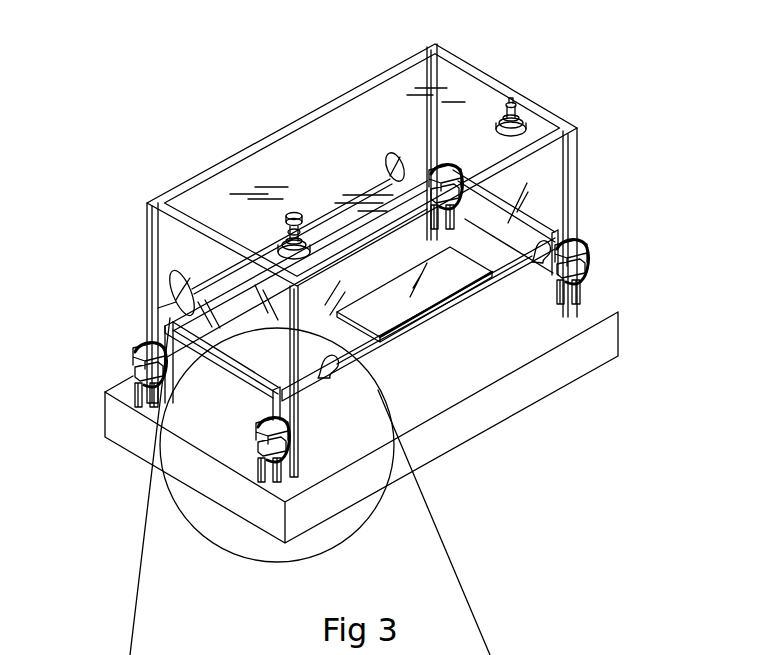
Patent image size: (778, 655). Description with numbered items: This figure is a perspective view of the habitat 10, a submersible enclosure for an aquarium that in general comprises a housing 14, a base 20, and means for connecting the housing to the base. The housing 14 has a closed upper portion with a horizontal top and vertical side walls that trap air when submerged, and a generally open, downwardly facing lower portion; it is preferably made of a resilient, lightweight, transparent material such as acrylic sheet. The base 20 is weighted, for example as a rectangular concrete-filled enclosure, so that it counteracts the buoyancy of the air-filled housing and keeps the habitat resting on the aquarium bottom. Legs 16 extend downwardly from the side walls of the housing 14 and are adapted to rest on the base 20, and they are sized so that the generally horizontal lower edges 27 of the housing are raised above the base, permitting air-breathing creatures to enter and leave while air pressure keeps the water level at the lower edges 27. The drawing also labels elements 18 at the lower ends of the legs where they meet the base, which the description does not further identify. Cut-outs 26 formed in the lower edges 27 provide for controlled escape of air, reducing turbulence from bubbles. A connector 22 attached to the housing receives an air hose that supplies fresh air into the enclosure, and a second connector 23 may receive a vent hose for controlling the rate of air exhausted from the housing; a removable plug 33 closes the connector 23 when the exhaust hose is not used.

The habitat 10 is at (163, 170).
The housing 14 is at (580, 150).
The legs 16 is at (427, 187).
The clips 18 is at (473, 203).
The base 20 is at (437, 458).
The connector 22 is at (527, 112).
The second connector 23 is at (245, 213).
The cut-outs 26 is at (170, 290).
The lower edges 27 is at (165, 310).
The removable plug 33 is at (293, 212).